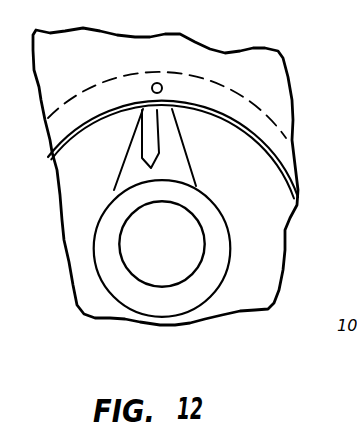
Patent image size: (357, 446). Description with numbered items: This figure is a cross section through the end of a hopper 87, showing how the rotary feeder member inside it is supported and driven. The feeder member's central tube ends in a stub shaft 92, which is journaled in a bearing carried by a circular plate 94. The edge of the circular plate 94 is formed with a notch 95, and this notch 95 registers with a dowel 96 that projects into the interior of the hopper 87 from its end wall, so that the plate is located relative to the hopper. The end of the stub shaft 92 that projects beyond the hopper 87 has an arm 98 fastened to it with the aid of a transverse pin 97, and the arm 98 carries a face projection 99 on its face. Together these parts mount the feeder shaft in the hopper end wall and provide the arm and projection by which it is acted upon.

The hopper 87 is at (112, 42).
The circular plate 94 is at (291, 158).
The notch 95 is at (156, 83).
The dowel 96 is at (161, 83).
The stub shaft 92 is at (143, 218).
The transverse pin 97 is at (232, 240).
The arm 98 is at (158, 156).
The face projection 99 is at (155, 153).